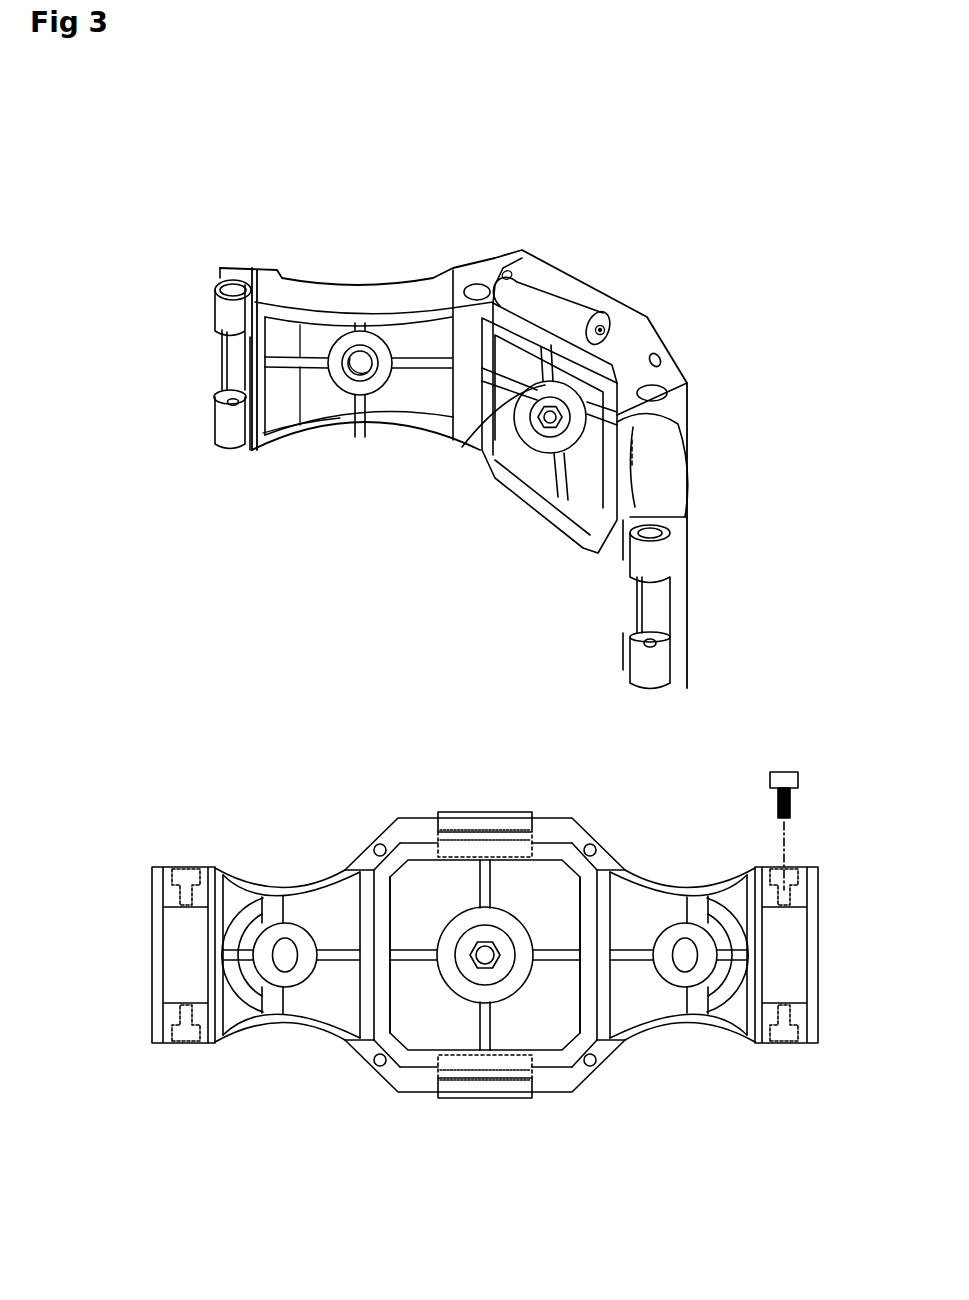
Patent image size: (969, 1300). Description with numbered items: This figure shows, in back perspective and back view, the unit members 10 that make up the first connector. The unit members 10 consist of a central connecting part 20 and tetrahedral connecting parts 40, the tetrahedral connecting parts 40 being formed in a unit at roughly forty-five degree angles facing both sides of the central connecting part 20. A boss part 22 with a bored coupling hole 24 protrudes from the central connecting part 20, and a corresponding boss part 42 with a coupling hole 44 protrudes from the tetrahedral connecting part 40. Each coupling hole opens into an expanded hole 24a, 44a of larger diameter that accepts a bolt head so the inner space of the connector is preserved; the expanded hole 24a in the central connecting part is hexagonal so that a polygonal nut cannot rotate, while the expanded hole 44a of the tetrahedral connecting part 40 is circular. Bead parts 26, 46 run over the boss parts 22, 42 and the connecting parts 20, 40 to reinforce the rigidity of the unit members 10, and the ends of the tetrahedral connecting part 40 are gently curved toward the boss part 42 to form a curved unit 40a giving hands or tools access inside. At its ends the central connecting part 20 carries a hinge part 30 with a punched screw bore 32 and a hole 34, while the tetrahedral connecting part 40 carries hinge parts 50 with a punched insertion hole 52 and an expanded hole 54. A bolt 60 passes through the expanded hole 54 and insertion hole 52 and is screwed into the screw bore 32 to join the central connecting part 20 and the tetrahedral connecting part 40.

The unit members 10 is at (692, 277).
The central connecting part 20 is at (610, 275).
The boss part 22 is at (487, 460).
The coupling hole 24 is at (478, 960).
The expanded hole 24a is at (540, 432).
The bead part 26 is at (680, 426).
The hinge part 30 is at (545, 283).
The screw bore 32 is at (610, 326).
The lug hole 34 is at (499, 271).
The tetrahedral connecting part 40 is at (361, 262).
The curved unit 40a is at (307, 435).
The boss part 42 is at (375, 380).
The coupling hole 44 is at (355, 368).
The expanded hole 44a is at (362, 378).
The bead part 46 is at (307, 353).
The hinge part 50 is at (218, 310).
The insertion hole 52 is at (233, 400).
The expanded hole 54 is at (237, 288).
The bolt 60 is at (770, 780).